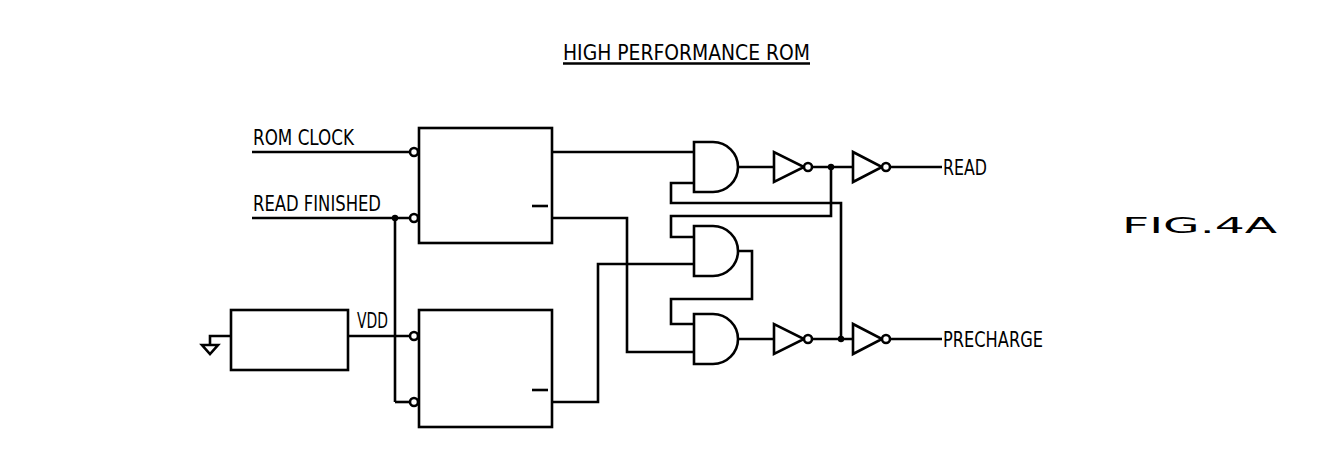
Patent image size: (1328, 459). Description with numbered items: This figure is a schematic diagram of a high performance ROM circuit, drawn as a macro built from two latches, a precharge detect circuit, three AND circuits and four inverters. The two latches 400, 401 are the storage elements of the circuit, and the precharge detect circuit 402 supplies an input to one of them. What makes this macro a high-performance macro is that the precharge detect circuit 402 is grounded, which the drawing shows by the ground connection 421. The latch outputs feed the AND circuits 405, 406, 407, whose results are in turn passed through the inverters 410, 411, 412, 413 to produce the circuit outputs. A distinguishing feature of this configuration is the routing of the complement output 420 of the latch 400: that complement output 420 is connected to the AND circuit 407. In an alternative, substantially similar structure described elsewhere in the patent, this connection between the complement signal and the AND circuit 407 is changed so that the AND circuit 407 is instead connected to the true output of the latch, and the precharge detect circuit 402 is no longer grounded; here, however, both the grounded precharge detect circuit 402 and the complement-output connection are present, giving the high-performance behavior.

The latch 400 is at (548, 126).
The latch 401 is at (495, 428).
The precharge detect circuit 402 is at (264, 309).
The AND circuit 405 is at (724, 142).
The AND circuit 406 is at (740, 243).
The AND circuit 407 is at (698, 363).
The inverter 410 is at (793, 152).
The inverter 411 is at (873, 152).
The inverter 412 is at (788, 350).
The inverter 413 is at (868, 350).
The complement output 420 is at (557, 203).
The ground connection 421 is at (201, 363).